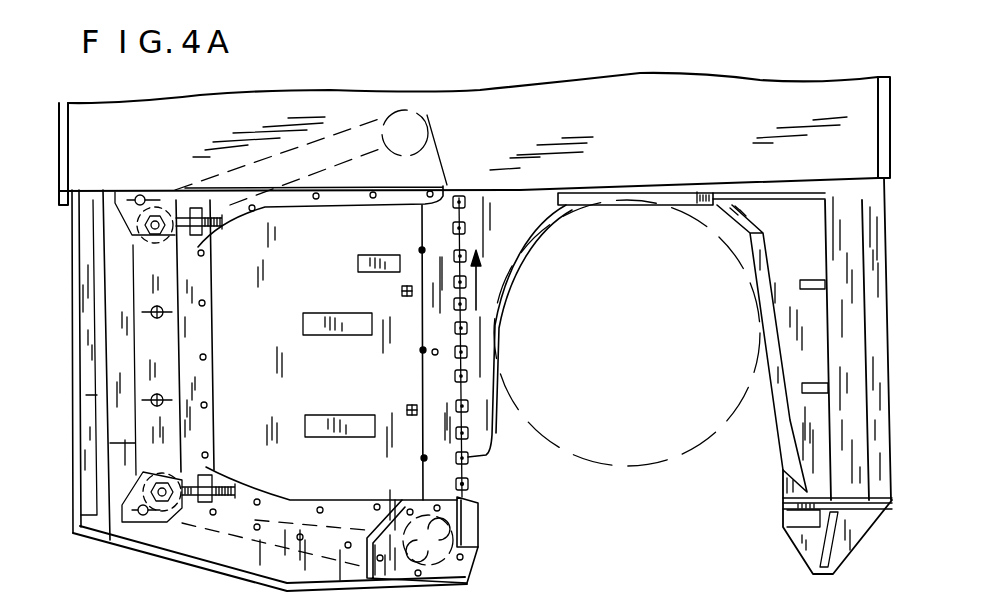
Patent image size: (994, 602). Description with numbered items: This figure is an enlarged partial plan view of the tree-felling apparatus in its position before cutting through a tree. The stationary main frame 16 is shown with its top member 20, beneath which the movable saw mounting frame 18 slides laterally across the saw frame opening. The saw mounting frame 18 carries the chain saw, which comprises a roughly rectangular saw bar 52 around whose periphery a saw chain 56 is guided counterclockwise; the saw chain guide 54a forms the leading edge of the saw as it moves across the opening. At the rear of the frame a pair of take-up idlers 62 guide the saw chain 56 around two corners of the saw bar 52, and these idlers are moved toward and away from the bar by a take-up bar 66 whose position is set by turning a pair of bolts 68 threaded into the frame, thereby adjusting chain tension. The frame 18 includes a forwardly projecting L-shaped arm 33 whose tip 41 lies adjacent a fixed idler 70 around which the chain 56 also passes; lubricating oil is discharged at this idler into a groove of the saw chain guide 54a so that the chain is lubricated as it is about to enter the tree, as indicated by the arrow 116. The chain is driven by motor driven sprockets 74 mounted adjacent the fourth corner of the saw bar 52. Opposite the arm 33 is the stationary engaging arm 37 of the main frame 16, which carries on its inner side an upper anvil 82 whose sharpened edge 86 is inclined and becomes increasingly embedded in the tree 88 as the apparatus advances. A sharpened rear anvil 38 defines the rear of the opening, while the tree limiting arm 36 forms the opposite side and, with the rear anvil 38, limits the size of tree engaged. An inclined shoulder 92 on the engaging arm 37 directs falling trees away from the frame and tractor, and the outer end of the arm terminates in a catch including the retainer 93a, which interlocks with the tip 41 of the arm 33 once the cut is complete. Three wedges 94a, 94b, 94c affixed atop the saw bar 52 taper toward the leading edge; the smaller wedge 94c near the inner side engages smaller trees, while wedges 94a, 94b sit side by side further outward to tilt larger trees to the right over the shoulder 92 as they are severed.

The main frame 16 is at (58, 149).
The saw mounting frame 18 is at (72, 358).
The top member 20 is at (468, 132).
The L-shaped arm 33 is at (138, 540).
The tree limiting arm 36 is at (490, 432).
The engaging arm 37 is at (887, 233).
The rear anvil 38 is at (700, 193).
The tip 41 is at (478, 522).
The saw bar 52 is at (316, 383).
The saw chain guide 54a is at (450, 346).
The saw chain 56 is at (468, 485).
The take-up idlers 62 is at (163, 193).
The take-up bar 66 is at (135, 443).
The bolts 68 is at (210, 243).
The fixed idler 70 is at (450, 557).
The motor driven sprockets 74 is at (430, 119).
The upper anvil 82 is at (827, 348).
The sharpened edge 86 is at (777, 450).
The tree 88 is at (727, 446).
The inclined shoulder 92 is at (857, 345).
The retainer 93a is at (783, 518).
The wedge 94a is at (308, 426).
The wedge 94b is at (305, 322).
The wedge 94c is at (360, 262).
The arrow 116 is at (477, 287).